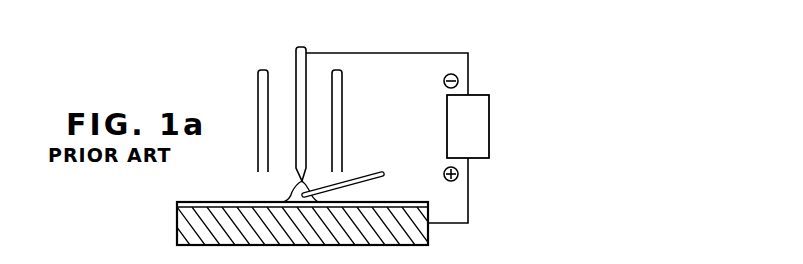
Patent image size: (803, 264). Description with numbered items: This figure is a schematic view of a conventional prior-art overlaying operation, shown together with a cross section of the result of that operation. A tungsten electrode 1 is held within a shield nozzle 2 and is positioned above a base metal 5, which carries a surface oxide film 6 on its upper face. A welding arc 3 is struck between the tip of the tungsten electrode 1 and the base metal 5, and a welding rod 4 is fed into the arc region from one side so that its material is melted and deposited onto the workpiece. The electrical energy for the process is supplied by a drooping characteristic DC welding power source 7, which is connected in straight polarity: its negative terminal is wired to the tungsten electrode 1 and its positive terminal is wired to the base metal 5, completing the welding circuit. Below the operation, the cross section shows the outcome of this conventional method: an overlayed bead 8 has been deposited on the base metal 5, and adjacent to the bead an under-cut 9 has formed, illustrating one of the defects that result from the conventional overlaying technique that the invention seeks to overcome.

The tungsten electrode 1 is at (303, 46).
The shield nozzle 2 is at (342, 88).
The welding arc 3 is at (285, 196).
The welding rod 4 is at (356, 183).
The base metal 5 is at (188, 222).
The surface oxide film 6 is at (215, 203).
The drooping characteristic DC welding power source 7 is at (477, 120).
The overlayed bead 8 is at (312, 259).
The under-cut 9 is at (262, 261).